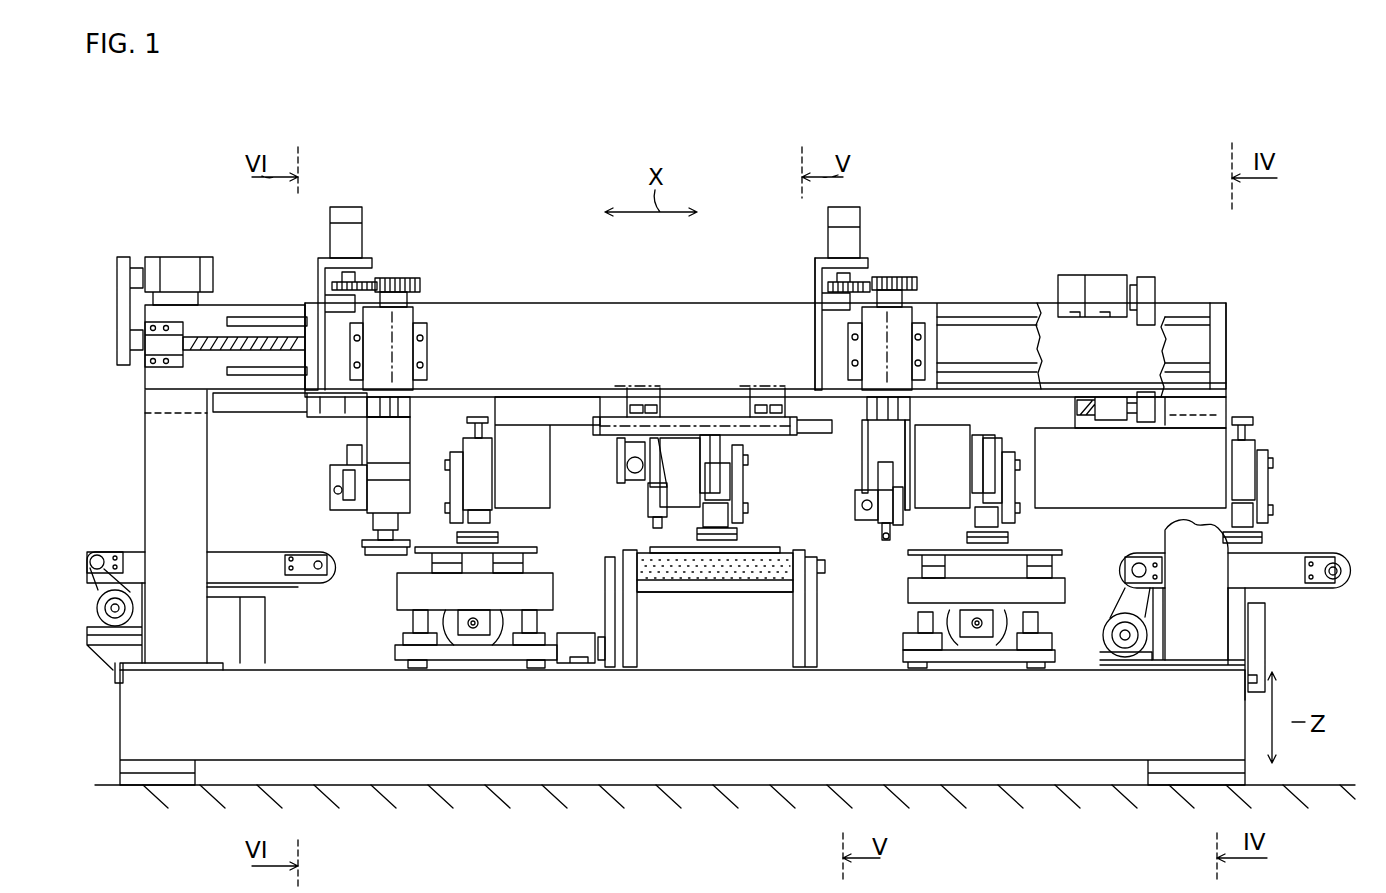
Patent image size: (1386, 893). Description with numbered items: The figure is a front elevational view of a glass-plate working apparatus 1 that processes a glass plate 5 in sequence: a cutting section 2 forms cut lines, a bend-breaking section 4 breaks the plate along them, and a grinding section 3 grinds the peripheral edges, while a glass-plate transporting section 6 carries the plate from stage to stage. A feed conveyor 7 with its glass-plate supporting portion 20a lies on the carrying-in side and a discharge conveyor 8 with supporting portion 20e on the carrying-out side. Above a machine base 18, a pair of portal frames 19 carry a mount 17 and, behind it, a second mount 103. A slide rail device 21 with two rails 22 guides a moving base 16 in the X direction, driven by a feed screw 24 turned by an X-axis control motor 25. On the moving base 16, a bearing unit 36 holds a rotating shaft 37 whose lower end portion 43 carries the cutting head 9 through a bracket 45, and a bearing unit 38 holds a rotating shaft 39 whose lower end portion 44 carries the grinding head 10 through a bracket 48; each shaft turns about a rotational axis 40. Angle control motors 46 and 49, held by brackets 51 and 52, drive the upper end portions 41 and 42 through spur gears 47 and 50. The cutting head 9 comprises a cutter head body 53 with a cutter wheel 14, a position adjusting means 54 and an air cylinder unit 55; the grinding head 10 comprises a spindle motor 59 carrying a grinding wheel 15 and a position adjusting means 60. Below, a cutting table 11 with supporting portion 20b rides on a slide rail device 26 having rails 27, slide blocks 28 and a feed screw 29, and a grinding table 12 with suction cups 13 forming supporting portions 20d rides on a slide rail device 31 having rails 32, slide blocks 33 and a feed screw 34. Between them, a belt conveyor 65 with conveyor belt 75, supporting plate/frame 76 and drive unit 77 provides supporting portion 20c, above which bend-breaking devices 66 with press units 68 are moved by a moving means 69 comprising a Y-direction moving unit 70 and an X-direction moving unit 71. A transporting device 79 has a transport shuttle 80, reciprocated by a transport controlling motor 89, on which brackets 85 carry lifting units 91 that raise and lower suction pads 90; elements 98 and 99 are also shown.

The glass-plate working apparatus 1 is at (1254, 301).
The cutting section 2 is at (1009, 672).
The grinding section 3 is at (474, 672).
The bend-breaking section 4 is at (722, 570).
The glass plate 5 is at (500, 583).
The glass-plate transporting section 6 is at (1030, 412).
The feed conveyor 7 is at (1282, 580).
The discharge conveyor 8 is at (130, 550).
The cutting head 9 is at (858, 505).
The grinding head 10 is at (375, 500).
The cutting table 11 is at (1057, 557).
The grinding table 12 is at (432, 597).
The suction cups 13 is at (513, 562).
The cutter wheel 14 is at (905, 470).
The grinding wheel 15 is at (363, 547).
The moving base 16 is at (497, 318).
The mount 17 is at (1195, 307).
The machine base 18 is at (775, 735).
The portal frames 19 is at (150, 405).
The glass-plate supporting portion 20a is at (1277, 545).
The glass-plate supporting portion 20b is at (918, 612).
The glass-plate supporting portion 20c is at (793, 565).
The glass-plate supporting portions 20d is at (432, 547).
The glass-plate supporting portion 20e is at (235, 552).
The slide rail device 21 is at (988, 320).
The rails 22 is at (245, 368).
The feed screw 24 is at (205, 340).
The X-axis control motor 25 is at (178, 270).
The slide rail device 26 is at (930, 630).
The rails 27 is at (917, 637).
The slide blocks 28 is at (918, 620).
The feed screw 29 is at (973, 630).
The slide rail device 31 is at (530, 632).
The rails 32 is at (425, 633).
The slide blocks 33 is at (415, 655).
The feed screw 34 is at (473, 630).
The bearing unit 36 is at (868, 353).
The rotating shaft 37 is at (900, 300).
The bearing unit 38 is at (405, 362).
The rotating shaft 39 is at (403, 300).
The rotational axis 40 is at (395, 328).
The upper end portion 41 is at (905, 280).
The upper end portion 42 is at (405, 282).
The lower end portion 43 is at (877, 390).
The lower end portion 44 is at (372, 398).
The bracket 45 is at (880, 410).
The angle control motor 46 is at (850, 217).
The spur gears 47 is at (853, 283).
The bracket 48 is at (380, 410).
The angle control motor 49 is at (352, 213).
The spur gears 50 is at (370, 282).
The bracket 51 is at (820, 307).
The bracket 52 is at (318, 302).
The cutter head body 53 is at (883, 523).
The position adjusting means 54 is at (887, 513).
The air cylinder unit 55 is at (887, 473).
The spindle motor 59 is at (385, 505).
The position adjusting means 60 is at (345, 487).
The belt conveyor 65 is at (687, 572).
The bend-breaking devices 66 is at (647, 490).
The press unit 68 is at (650, 515).
The moving means 69 is at (625, 425).
The Y-direction moving unit 70 is at (628, 477).
The X-direction moving unit 71 is at (680, 420).
The conveyor belt 75 is at (750, 573).
The supporting plate/frame 76 is at (637, 560).
The drive unit 77 is at (573, 650).
The transporting device 79 is at (723, 413).
The transport shuttle 80 is at (563, 412).
The bracket 85 is at (536, 471).
The transport controlling motor 89 is at (1103, 285).
The suction pads 90 is at (498, 540).
The lifting unit 91 is at (460, 455).
The body 98 is at (478, 470).
The side plate 99 is at (456, 497).
The mount 103 is at (1130, 365).